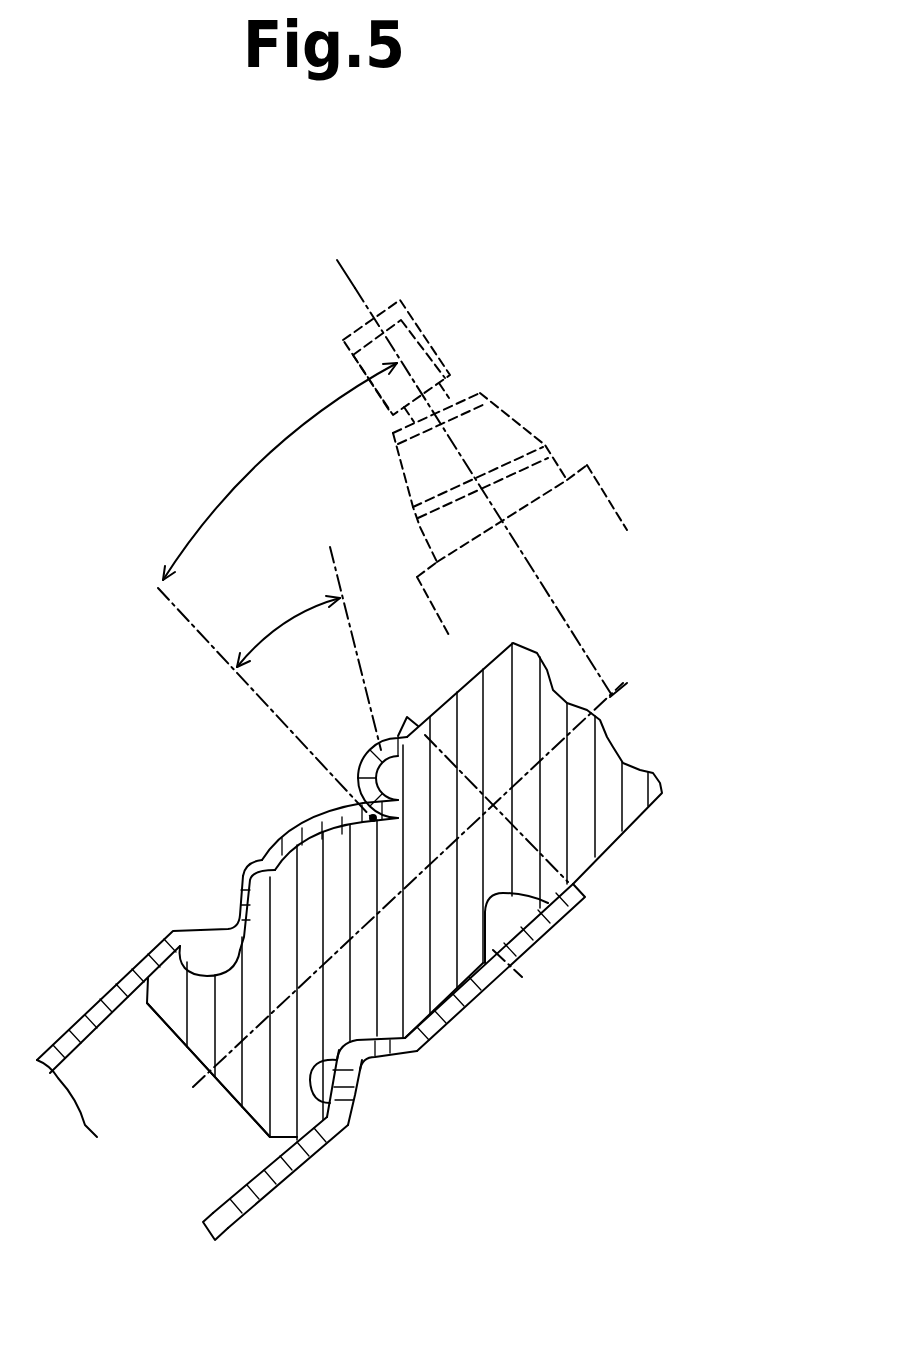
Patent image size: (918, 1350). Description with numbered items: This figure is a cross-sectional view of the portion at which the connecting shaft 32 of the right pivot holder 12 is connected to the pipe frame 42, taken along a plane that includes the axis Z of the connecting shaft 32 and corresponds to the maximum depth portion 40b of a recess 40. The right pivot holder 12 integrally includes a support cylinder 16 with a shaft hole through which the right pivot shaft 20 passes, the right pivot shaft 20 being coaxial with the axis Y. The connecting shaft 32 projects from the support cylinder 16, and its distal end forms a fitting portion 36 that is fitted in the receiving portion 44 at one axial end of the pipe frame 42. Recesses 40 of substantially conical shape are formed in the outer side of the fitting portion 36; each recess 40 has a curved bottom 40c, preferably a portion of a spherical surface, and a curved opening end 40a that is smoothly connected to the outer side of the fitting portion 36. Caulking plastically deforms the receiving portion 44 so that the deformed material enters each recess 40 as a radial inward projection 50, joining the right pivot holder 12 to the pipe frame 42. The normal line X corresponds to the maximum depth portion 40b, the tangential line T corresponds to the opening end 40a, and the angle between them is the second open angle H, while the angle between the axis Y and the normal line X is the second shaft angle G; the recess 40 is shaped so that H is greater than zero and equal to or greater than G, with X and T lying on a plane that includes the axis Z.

The right pivot holder 12 is at (623, 318).
The support cylinder 16 is at (603, 490).
The right pivot shaft 20 is at (430, 327).
The connecting shaft 32 is at (620, 838).
The fitting portion 36 is at (237, 1088).
The recess 40 is at (240, 920).
The opening end 40a is at (361, 775).
The maximum depth portion 40b is at (350, 803).
The bottom 40c is at (233, 927).
The pipe frame 42 is at (258, 1200).
The receiving portion 44 is at (468, 1005).
The radial inward projection 50 is at (173, 946).
The normal line X is at (172, 615).
The axis Y is at (350, 288).
The axis Z is at (607, 750).
The tangential line T is at (347, 627).
The second shaft angle G is at (280, 471).
The second open angle H is at (288, 625).